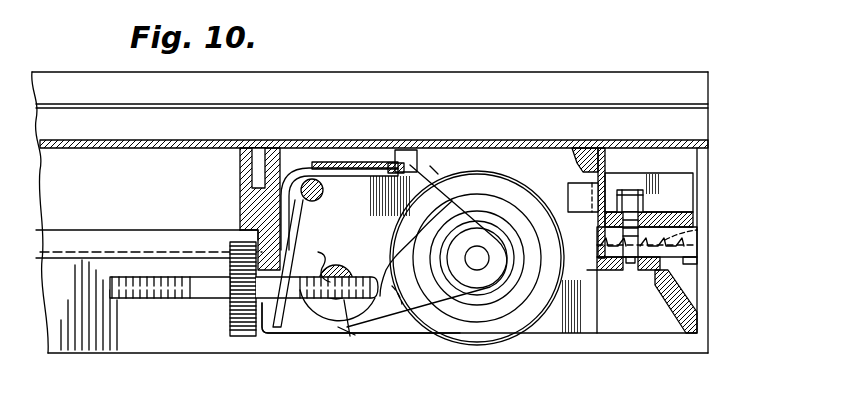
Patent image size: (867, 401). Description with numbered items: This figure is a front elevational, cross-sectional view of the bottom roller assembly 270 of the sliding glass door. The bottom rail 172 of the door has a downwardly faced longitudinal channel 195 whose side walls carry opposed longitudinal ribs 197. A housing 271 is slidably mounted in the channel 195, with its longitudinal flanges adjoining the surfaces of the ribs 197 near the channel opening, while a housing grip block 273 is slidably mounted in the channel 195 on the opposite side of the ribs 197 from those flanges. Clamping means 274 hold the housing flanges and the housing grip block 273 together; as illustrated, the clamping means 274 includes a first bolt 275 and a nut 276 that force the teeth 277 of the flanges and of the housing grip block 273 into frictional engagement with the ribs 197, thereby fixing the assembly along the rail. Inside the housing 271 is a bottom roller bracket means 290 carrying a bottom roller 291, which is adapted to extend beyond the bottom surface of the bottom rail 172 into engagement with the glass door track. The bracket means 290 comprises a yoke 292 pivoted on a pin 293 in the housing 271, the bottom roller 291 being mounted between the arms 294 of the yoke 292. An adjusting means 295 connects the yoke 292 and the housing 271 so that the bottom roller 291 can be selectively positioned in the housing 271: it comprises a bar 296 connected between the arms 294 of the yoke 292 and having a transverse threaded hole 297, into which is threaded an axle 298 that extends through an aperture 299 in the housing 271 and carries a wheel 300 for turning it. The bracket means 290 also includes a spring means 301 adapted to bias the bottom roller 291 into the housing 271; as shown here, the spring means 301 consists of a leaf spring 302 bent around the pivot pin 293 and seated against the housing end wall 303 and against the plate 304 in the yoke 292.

The bottom roller assembly 270 is at (490, 82).
The bottom roller bracket means 290 is at (405, 132).
The bottom rail channel 195 is at (190, 170).
The bottom rail 172 is at (543, 147).
The longitudinal ribs 197 is at (47, 242).
The housing 271 is at (243, 195).
The housing end wall 303 is at (240, 222).
The wheel 300 is at (228, 321).
The bar 296 is at (345, 266).
The transverse threaded hole 297 is at (350, 337).
The axle 298 is at (328, 262).
The aperture 299 is at (275, 316).
The pivot pin 293 is at (305, 202).
The spring means 301 is at (349, 184).
The leaf spring 302 is at (340, 172).
The plate 304 is at (420, 160).
The bottom roller 291 is at (517, 190).
The arms of the yoke 294 is at (418, 308).
The yoke 292 is at (443, 170).
The adjusting means 295 is at (310, 338).
The housing grip block 273 is at (710, 188).
The nut 276 is at (648, 200).
The teeth 277 is at (700, 233).
The first bolt 275 is at (625, 262).
The clamping means 274 is at (606, 288).